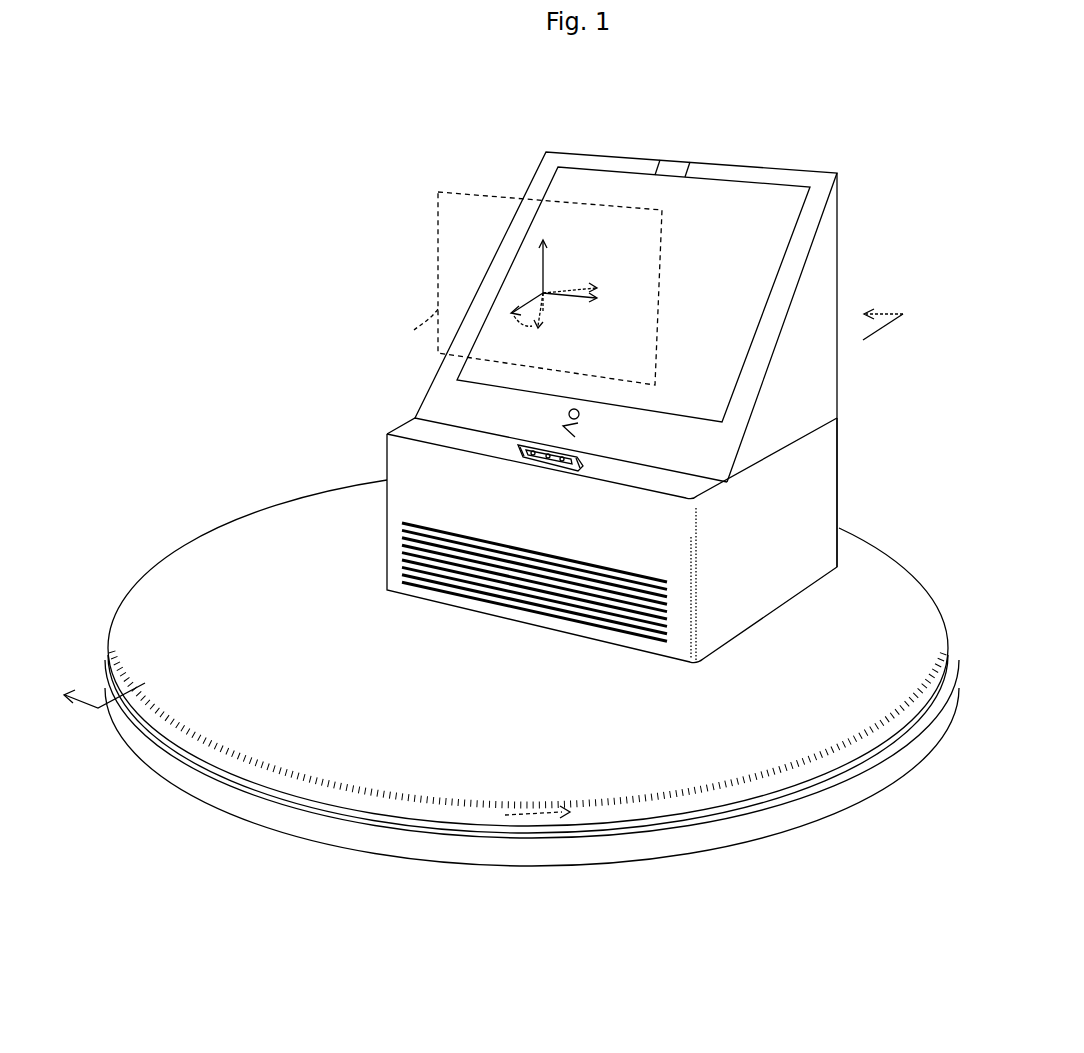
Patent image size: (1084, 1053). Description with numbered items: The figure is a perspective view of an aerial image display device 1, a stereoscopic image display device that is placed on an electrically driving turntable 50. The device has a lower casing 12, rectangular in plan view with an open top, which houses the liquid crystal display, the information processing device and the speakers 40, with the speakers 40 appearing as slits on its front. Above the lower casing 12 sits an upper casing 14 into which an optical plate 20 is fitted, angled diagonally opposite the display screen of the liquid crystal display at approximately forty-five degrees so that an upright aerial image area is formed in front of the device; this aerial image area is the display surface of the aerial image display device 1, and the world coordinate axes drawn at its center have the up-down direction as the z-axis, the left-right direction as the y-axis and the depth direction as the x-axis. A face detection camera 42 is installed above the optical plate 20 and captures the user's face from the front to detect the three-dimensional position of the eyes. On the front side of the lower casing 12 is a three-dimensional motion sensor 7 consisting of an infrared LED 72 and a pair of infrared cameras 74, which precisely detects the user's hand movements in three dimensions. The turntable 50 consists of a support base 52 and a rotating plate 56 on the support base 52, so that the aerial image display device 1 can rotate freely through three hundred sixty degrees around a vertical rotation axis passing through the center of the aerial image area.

The aerial image display device 1 is at (468, 98).
The lower casing 12 is at (823, 482).
The upper casing 14 is at (828, 278).
The optical plate 20 is at (768, 202).
The speakers 40 is at (453, 533).
The face detection camera 42 is at (658, 166).
The turntable 50 is at (204, 522).
The support base 52 is at (751, 829).
The rotating plate 56 is at (893, 602).
The 3D motion sensor 7 is at (600, 468).
The infrared LED 72 is at (541, 448).
The infrared cameras 74 is at (520, 453).